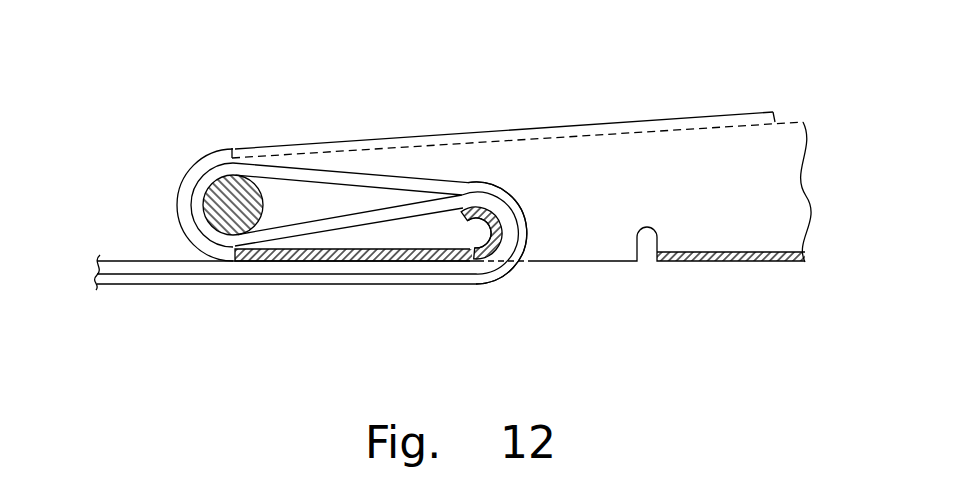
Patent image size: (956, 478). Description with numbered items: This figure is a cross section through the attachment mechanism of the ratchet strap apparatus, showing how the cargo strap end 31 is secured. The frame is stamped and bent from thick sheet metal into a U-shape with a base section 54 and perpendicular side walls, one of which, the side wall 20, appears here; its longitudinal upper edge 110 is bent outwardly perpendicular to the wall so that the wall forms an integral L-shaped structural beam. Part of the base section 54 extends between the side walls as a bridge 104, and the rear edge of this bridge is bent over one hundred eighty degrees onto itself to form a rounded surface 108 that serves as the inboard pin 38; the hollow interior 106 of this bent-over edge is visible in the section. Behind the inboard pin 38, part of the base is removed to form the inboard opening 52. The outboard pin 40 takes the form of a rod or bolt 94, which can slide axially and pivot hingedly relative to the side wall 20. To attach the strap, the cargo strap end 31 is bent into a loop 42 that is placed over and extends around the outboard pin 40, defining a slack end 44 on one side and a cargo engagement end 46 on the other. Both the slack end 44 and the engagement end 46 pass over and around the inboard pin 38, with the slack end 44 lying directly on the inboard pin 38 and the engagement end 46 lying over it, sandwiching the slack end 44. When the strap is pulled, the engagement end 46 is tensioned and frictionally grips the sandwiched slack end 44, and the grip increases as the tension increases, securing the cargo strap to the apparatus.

The side wall 20 is at (720, 172).
The longitudinal upper edge 110 is at (633, 125).
The loop 42 is at (183, 179).
The outboard pin 40 is at (221, 178).
The rod or bolt 94 is at (260, 187).
The cargo engagement end 46 is at (376, 173).
The slack end 44 is at (131, 259).
The cargo strap end 31 is at (125, 288).
The bridge 104 is at (354, 259).
The rounded surface 108 is at (487, 193).
The hook cavity 106 is at (455, 236).
The inboard pin 38 is at (500, 235).
The inboard opening 52 is at (598, 266).
The base section/portion 54 is at (736, 265).